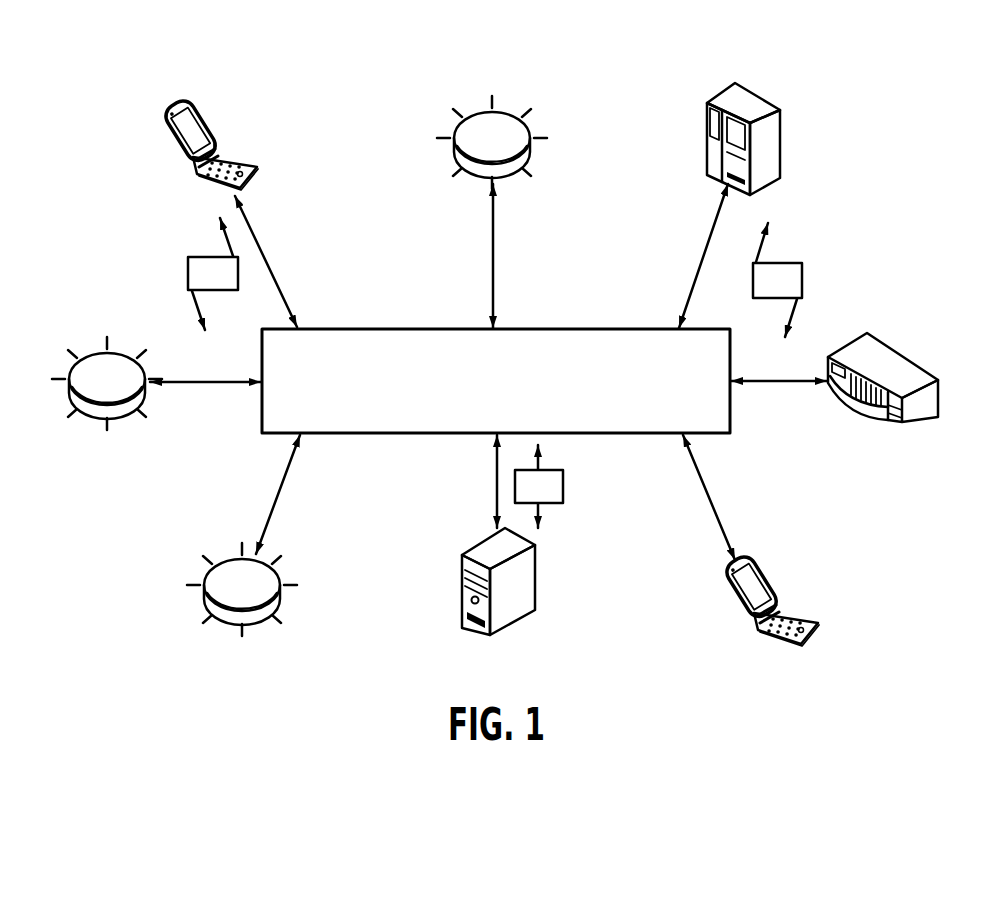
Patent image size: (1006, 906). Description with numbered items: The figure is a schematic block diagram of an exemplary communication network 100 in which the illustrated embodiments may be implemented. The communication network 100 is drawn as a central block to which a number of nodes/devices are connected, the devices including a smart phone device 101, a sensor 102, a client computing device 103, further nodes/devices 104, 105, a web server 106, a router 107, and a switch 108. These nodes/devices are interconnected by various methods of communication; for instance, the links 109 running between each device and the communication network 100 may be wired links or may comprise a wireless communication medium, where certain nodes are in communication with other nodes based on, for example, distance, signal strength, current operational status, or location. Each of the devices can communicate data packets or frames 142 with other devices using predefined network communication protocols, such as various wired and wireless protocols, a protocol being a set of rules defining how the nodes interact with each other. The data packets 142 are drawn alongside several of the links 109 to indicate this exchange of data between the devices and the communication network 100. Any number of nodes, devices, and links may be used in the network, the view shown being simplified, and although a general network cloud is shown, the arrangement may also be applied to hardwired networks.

The communication network 100 is at (513, 413).
The smart phone device 101 is at (232, 152).
The sensor 102 is at (532, 128).
The client computing device 103 is at (782, 142).
The node/device 104 is at (905, 362).
The node/device 105 is at (792, 615).
The web server 106 is at (478, 545).
The router 107 is at (228, 630).
The switch 108 is at (118, 423).
The link 109 is at (282, 291).
The data packet 142 is at (495, 373).